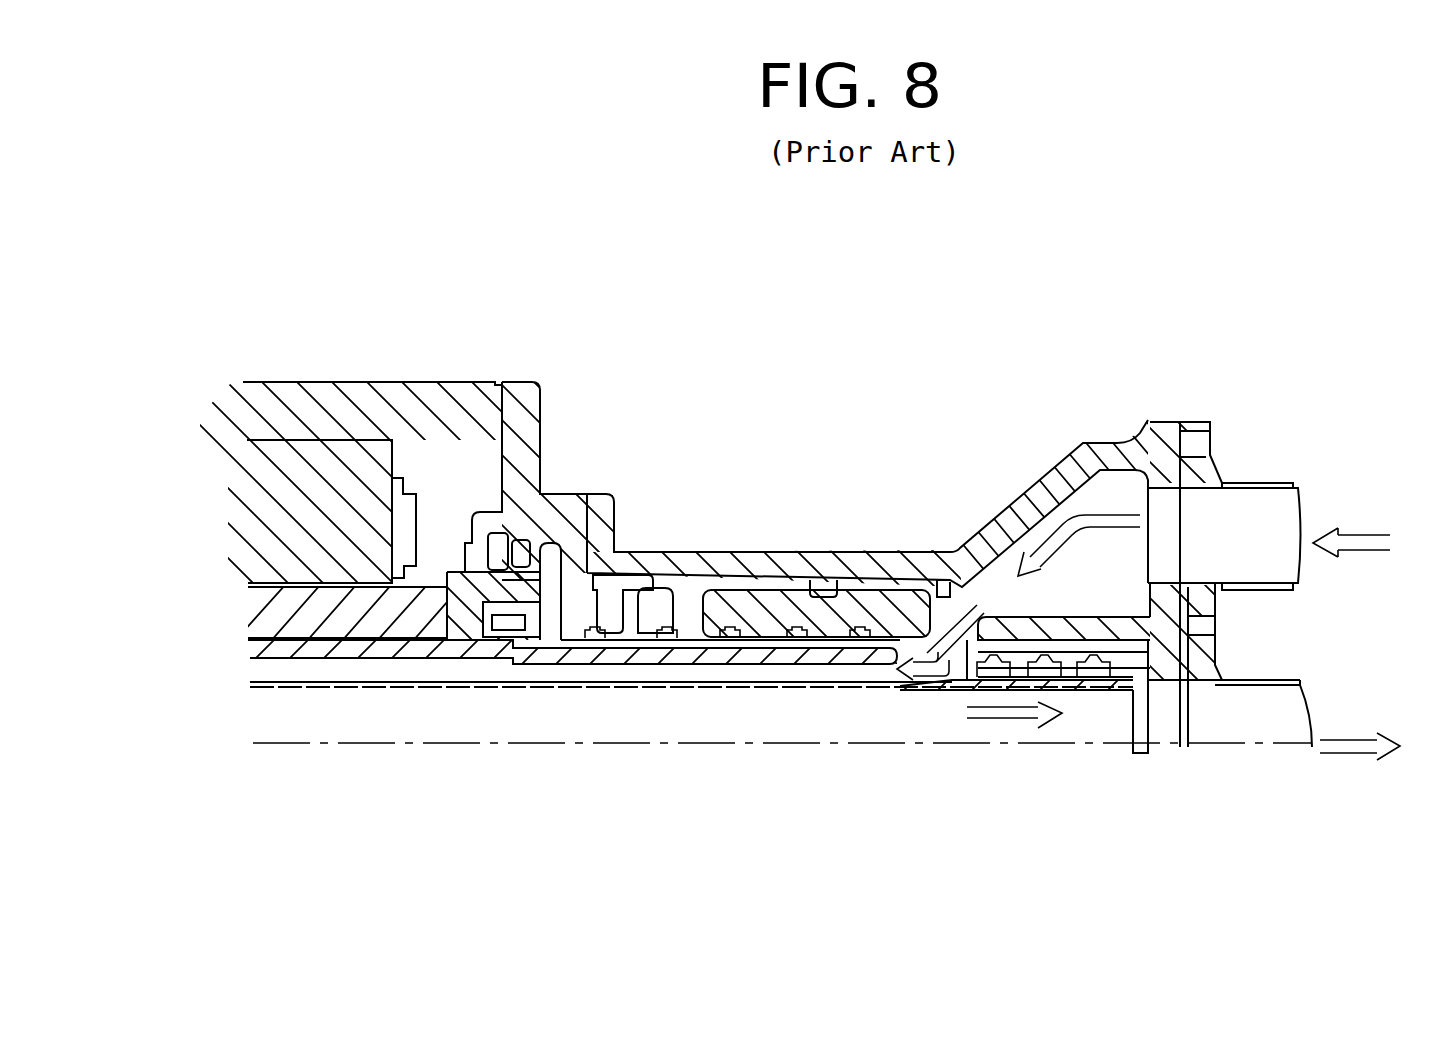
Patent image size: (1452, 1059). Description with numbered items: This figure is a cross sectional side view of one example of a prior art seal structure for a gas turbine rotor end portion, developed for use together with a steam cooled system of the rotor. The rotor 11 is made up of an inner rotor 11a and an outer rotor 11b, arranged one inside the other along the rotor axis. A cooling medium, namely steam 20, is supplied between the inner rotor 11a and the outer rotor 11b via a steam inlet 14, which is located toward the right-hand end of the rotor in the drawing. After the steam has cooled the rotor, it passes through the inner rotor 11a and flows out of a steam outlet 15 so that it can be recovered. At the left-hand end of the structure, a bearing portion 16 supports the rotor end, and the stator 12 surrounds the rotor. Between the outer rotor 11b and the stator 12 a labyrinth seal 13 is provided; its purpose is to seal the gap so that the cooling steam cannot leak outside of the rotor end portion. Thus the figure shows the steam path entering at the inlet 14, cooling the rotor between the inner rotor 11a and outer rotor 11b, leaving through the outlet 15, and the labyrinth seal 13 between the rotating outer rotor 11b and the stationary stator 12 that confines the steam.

The rotor 11 is at (398, 687).
The inner rotor 11a is at (283, 687).
The outer rotor 11b is at (270, 642).
The stator 12 is at (463, 408).
The labyrinth seal 13 is at (528, 547).
The steam inlet 14 is at (1263, 523).
The steam outlet 15 is at (1230, 730).
The bearing portion 16 is at (316, 470).
The steam 20 is at (1365, 535).